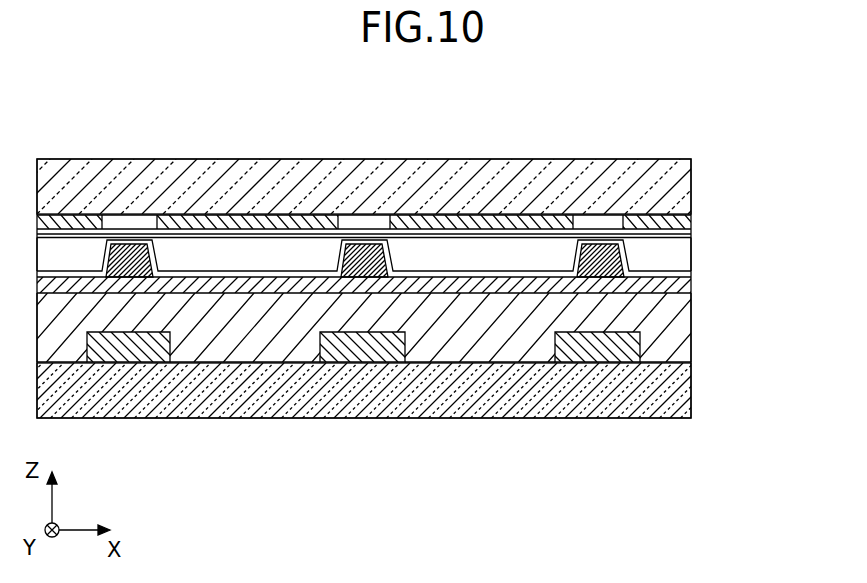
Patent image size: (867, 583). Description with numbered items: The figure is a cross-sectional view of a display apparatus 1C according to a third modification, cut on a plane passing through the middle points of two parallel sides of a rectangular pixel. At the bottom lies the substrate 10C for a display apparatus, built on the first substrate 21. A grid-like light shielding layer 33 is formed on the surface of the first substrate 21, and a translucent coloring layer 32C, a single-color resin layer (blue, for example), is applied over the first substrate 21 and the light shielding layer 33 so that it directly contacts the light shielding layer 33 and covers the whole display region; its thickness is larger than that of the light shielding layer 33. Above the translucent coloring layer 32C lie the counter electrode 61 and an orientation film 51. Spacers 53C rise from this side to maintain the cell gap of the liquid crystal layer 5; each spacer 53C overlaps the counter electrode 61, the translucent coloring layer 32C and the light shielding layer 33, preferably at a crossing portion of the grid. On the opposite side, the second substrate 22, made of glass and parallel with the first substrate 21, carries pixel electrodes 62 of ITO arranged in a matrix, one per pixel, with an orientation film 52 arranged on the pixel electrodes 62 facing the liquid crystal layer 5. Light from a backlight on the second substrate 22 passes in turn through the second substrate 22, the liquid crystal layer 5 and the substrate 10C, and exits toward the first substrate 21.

The display apparatus 1C is at (673, 130).
The substrate for a display apparatus 10C is at (778, 261).
The first substrate 21 is at (692, 393).
The second substrate 22 is at (688, 186).
The translucent coloring layer 32C is at (692, 323).
The light shielding layer 33 is at (641, 350).
The liquid crystal layer 5 is at (689, 257).
The orientation film 51 is at (690, 277).
The orientation film 52 is at (690, 236).
The spacer 53C is at (128, 241).
The counter electrode 61 is at (692, 290).
The pixel electrode 62 is at (238, 222).